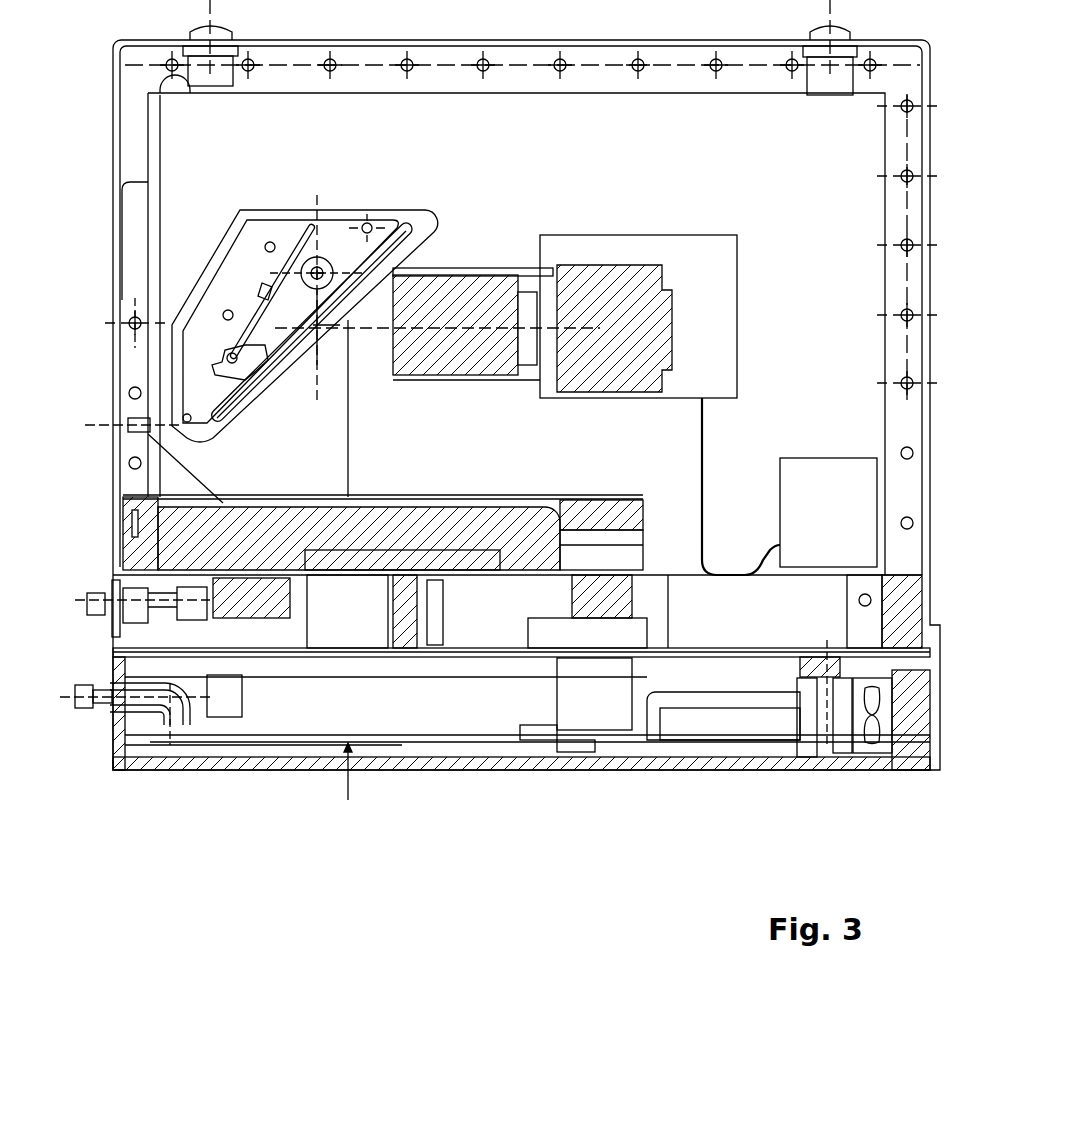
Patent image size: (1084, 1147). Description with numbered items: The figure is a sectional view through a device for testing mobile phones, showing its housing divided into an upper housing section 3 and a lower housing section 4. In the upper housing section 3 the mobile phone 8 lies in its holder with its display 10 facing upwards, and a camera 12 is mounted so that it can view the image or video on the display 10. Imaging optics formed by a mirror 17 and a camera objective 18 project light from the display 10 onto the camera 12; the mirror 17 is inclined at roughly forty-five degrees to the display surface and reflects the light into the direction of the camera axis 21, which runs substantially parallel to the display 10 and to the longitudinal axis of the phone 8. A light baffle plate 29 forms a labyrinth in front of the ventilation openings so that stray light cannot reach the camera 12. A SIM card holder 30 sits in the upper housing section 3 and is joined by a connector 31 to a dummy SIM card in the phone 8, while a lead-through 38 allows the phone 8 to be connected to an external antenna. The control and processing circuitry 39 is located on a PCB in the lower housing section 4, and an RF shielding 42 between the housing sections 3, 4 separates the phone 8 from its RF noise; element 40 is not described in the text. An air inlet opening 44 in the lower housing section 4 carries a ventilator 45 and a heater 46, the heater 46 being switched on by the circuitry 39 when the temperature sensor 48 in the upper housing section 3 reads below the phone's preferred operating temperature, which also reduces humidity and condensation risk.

The upper housing section 3 is at (116, 122).
The light baffle plate 29 is at (148, 190).
The temperature sensor 48 is at (270, 290).
The mirror 17 is at (362, 253).
The camera objective 18 is at (452, 276).
The camera 12 is at (580, 265).
The camera axis 21 is at (448, 328).
The SIM card holder 30 is at (841, 458).
The connector 31 is at (763, 543).
The display 10 is at (128, 420).
The mobile phone 8 is at (172, 547).
The lead-through 38 is at (113, 557).
The lower housing section 4 is at (108, 745).
The control and processing circuitry 39 is at (337, 773).
The intermediate plate 40 is at (402, 745).
The RF shielding 42 is at (463, 657).
The heater 46 is at (842, 743).
The ventilator 45 is at (872, 742).
The air inlet opening 44 is at (917, 723).